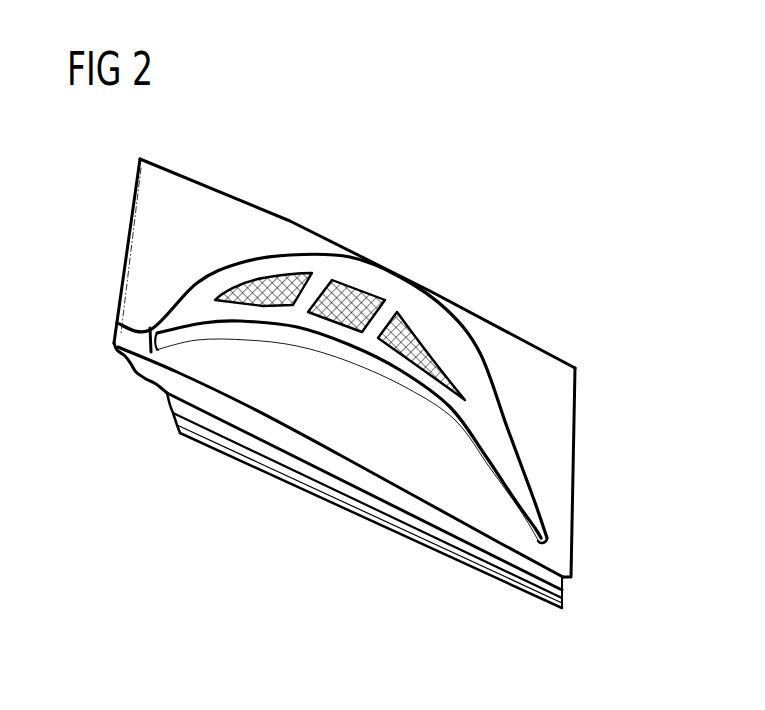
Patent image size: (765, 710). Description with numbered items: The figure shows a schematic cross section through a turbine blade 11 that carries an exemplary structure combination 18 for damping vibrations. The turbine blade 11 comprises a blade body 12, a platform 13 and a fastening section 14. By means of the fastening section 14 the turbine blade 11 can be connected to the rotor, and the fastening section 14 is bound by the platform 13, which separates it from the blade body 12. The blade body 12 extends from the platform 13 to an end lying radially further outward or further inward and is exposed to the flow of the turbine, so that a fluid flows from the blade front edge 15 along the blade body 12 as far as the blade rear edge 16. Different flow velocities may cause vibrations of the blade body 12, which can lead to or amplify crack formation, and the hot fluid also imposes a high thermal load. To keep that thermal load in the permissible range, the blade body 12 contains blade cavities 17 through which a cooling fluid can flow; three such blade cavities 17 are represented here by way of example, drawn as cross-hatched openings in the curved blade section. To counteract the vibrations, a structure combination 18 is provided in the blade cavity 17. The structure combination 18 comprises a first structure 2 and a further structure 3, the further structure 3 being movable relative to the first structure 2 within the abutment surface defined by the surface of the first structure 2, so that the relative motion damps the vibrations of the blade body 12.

The first structure 2 is at (350, 263).
The further structure 3 is at (248, 287).
The turbine blade 11 is at (479, 172).
The blade body 12 is at (488, 430).
The platform 13 is at (162, 178).
The fastening section 14 is at (563, 597).
The blade front edge 15 is at (116, 322).
The blade rear edge 16 is at (540, 518).
The blade cavities 17 is at (387, 275).
The structure combination 18 is at (292, 273).